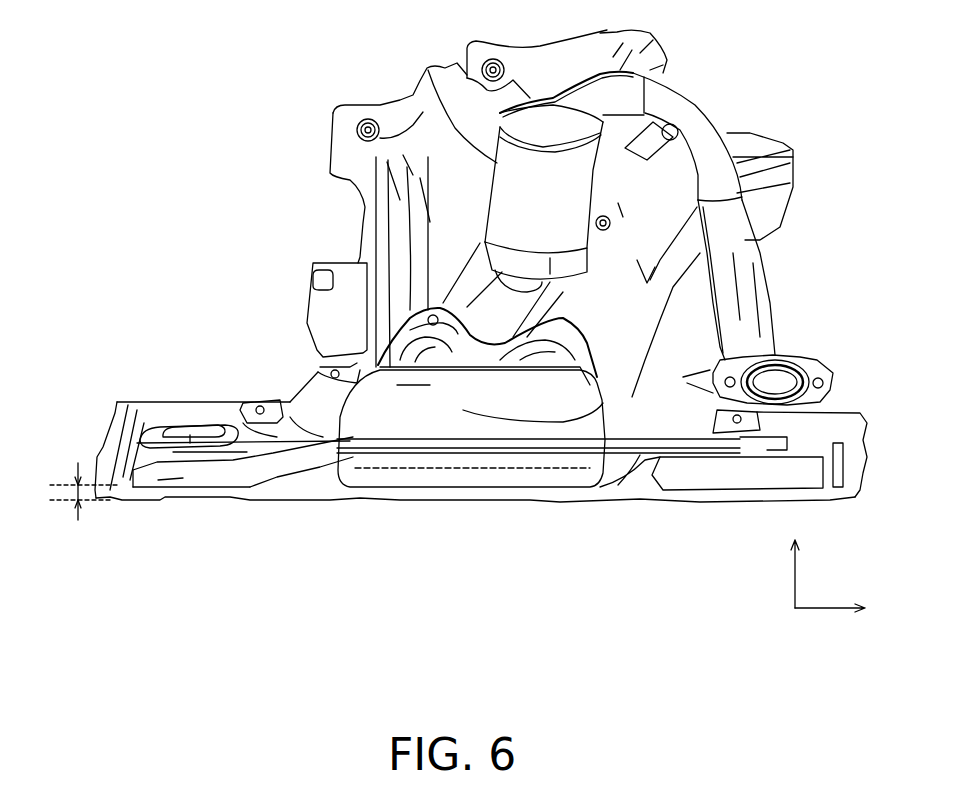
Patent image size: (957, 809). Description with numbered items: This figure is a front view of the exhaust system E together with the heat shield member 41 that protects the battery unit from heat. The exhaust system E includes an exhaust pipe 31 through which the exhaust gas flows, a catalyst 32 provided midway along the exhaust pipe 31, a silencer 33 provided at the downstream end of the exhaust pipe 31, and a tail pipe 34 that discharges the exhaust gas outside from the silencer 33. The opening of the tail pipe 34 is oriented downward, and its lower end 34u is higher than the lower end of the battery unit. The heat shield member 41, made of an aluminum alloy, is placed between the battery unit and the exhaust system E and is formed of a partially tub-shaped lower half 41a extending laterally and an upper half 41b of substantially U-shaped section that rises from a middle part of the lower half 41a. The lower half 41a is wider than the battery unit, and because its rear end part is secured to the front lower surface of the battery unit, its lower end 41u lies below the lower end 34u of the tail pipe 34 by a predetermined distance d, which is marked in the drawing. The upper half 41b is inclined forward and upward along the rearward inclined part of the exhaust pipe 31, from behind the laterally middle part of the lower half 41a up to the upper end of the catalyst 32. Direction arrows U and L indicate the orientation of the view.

The exhaust pipe 31 is at (767, 274).
The catalyst 32 is at (500, 167).
The silencer 33 is at (392, 488).
The tail pipe 34 is at (280, 475).
The lower end of tail pipe opening 34u is at (190, 490).
The heat shield member 41 is at (118, 398).
The lower half 41a is at (168, 402).
The upper half 41b is at (332, 150).
The lower end of lower half 41u is at (110, 500).
The exhaust system E is at (723, 110).
The predetermined distance d is at (84, 491).
The upward direction U is at (795, 572).
The leftward direction L is at (830, 607).